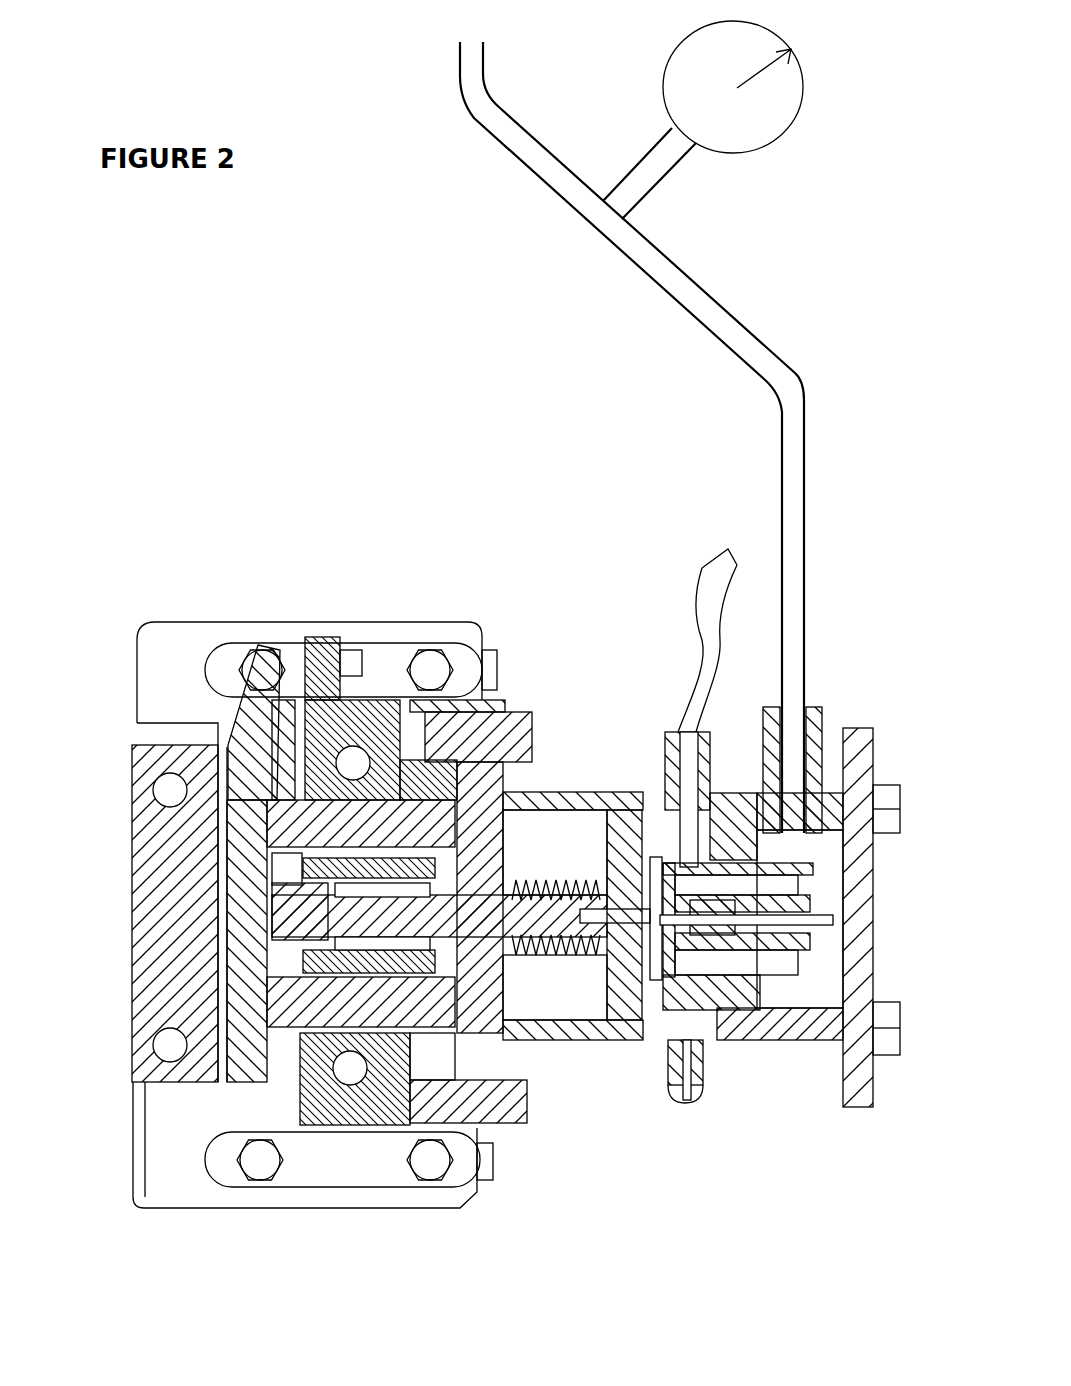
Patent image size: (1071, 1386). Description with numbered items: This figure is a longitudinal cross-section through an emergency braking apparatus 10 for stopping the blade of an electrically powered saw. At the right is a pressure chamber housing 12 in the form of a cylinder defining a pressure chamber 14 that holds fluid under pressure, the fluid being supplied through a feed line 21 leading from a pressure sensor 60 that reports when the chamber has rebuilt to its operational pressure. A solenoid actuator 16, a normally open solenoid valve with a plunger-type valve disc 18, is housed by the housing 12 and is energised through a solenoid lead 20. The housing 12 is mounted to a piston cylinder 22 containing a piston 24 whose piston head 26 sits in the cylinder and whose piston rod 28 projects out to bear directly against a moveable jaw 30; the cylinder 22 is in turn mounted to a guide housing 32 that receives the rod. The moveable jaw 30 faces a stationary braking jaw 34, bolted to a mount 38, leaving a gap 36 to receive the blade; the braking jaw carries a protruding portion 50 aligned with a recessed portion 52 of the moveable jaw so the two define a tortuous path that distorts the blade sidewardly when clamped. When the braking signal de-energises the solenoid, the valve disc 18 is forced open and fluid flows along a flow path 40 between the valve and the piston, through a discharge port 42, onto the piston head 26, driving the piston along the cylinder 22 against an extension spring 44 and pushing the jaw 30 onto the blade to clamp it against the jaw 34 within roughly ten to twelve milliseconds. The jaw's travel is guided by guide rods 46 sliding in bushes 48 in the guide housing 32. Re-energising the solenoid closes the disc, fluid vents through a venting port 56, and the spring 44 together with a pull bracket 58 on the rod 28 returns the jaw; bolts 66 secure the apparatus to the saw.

The emergency braking apparatus 10 is at (392, 416).
The pressure chamber housing 12 is at (867, 893).
The pressure chamber 14 is at (830, 997).
The solenoid actuator 16 is at (673, 732).
The valve disc 18 is at (703, 1043).
The solenoid lead 20 is at (713, 580).
The feed line 21 is at (703, 299).
The piston cylinder 22 is at (563, 1040).
The piston 24 is at (563, 862).
The piston head 26 is at (612, 792).
The piston rod 28 is at (375, 890).
The moveable jaw 30 is at (250, 1068).
The guide housing 32 is at (440, 660).
The stationary braking jaw 34 is at (160, 745).
The gap 36 is at (220, 1070).
The mount 38 is at (193, 643).
The flow path 40 is at (653, 855).
The discharge port 42 is at (606, 852).
The extension spring 44 is at (560, 955).
The guide rods 46 is at (284, 850).
The bush 48 is at (385, 880).
The protruding portion 50 is at (217, 930).
The recessed portion 52 is at (220, 952).
The venting port 56 is at (683, 1093).
The pull bracket 58 is at (352, 1033).
The pressure sensor 60 is at (792, 108).
The bolts 66 is at (428, 660).